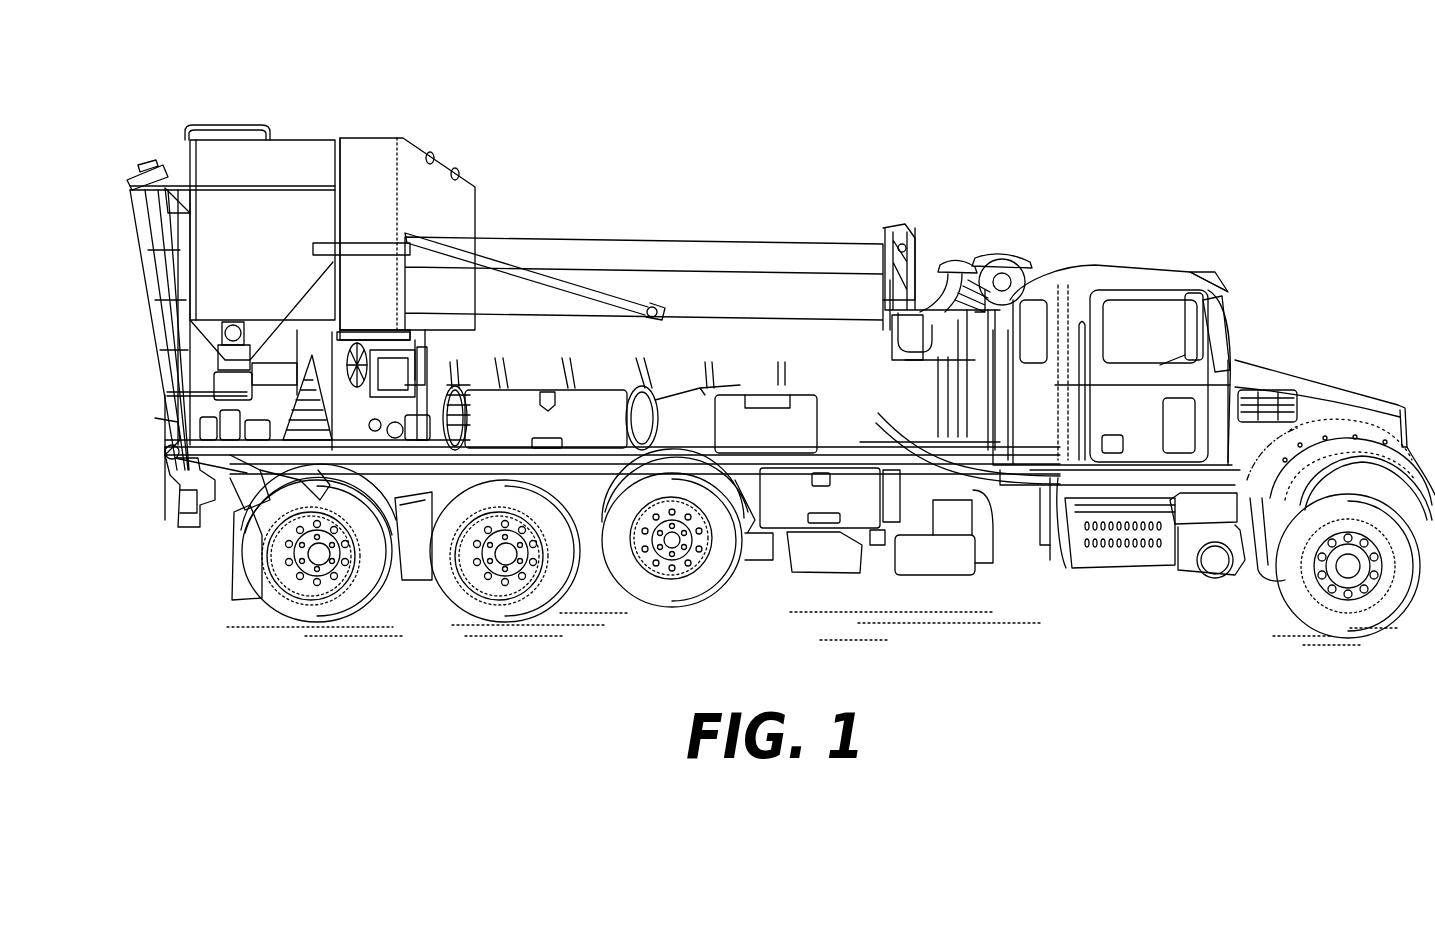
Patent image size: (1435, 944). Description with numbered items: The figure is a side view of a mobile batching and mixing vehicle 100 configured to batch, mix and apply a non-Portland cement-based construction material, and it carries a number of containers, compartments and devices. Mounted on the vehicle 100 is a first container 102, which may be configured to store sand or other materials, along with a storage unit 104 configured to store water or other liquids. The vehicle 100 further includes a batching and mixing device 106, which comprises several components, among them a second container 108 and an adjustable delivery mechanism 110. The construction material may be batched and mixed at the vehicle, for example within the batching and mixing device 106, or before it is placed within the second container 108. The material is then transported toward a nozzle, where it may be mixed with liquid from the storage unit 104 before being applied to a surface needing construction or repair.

The mobile batching and mixing vehicle 100 is at (1268, 95).
The first container 102 is at (755, 258).
The storage unit 104 is at (465, 207).
The batching and mixing device 106 is at (155, 490).
The second container 108 is at (298, 163).
The adjustable delivery mechanism 110 is at (147, 258).